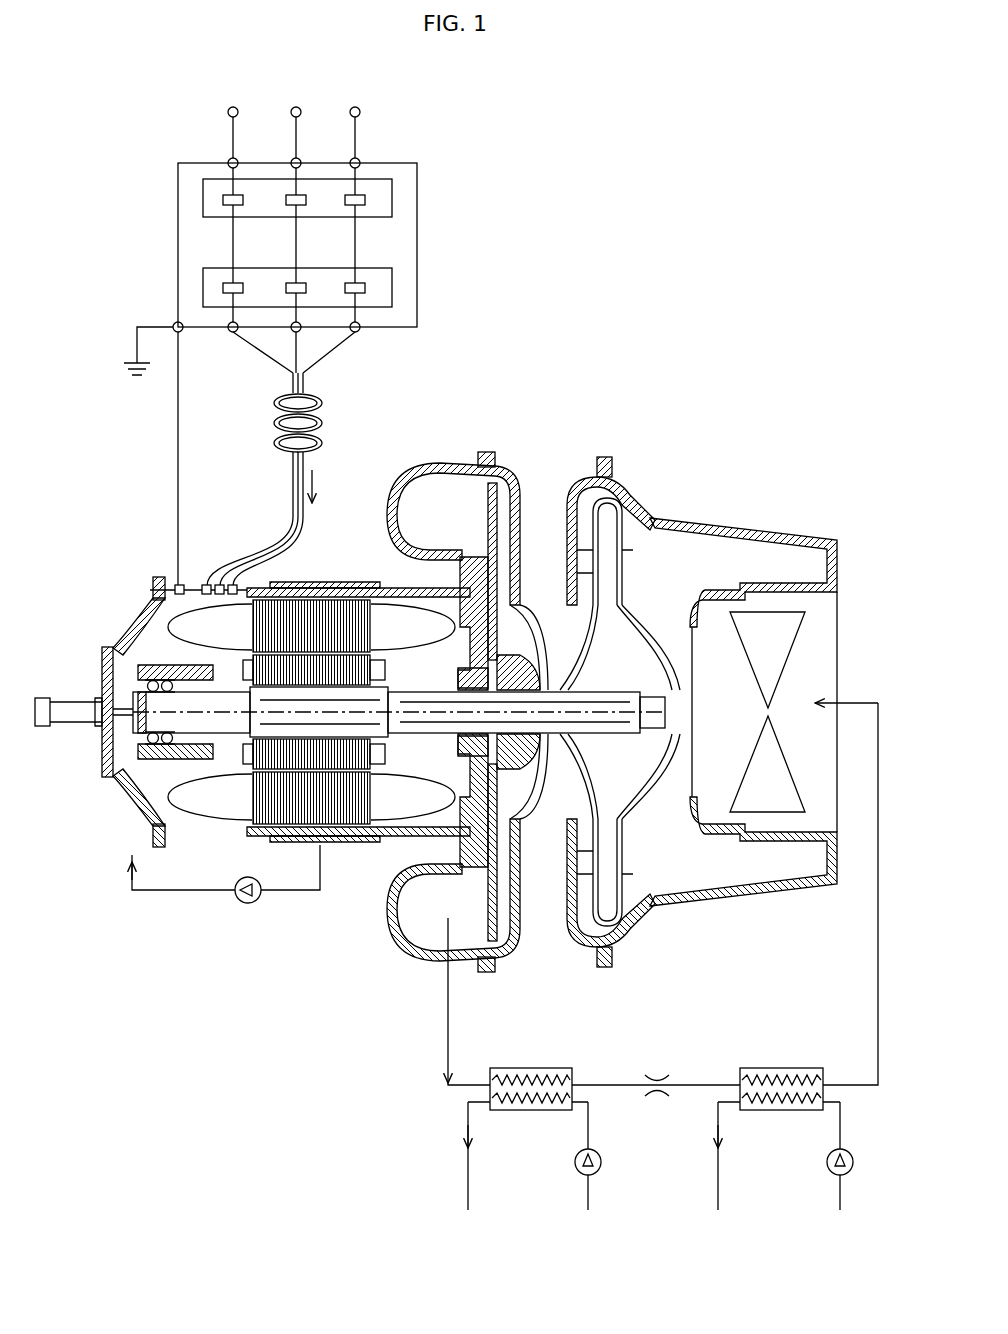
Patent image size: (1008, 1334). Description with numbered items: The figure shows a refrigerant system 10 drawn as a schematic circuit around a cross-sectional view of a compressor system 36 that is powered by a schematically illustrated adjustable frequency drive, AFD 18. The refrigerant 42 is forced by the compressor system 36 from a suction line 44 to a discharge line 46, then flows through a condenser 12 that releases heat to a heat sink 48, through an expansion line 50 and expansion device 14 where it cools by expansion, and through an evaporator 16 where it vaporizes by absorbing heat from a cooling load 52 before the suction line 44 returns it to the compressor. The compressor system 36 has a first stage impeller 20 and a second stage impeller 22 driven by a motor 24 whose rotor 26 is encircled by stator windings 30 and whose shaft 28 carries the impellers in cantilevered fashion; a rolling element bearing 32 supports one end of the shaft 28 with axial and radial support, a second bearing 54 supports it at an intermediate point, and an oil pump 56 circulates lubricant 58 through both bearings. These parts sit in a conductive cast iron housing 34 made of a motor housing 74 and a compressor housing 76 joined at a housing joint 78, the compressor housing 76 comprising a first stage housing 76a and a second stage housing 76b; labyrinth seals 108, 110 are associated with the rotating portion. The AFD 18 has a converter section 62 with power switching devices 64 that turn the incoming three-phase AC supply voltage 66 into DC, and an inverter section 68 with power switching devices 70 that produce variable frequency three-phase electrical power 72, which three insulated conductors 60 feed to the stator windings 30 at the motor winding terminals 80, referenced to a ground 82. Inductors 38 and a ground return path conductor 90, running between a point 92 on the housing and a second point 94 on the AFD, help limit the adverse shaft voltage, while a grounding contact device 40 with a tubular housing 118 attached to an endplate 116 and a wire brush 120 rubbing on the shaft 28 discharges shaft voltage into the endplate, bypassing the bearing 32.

The refrigerant system 10 is at (280, 1012).
The condenser 12 is at (537, 1068).
The expansion device 14 is at (668, 1074).
The evaporator 16 is at (775, 1068).
The AFD 18 is at (178, 235).
The first stage impeller 20 is at (693, 645).
The second stage impeller 22 is at (558, 614).
The motor 24 is at (348, 537).
The rotor 26 is at (242, 762).
The shaft 28 is at (440, 688).
The stator windings 30 is at (334, 828).
The rolling element bearing 32 is at (143, 738).
The cast iron housing 34 is at (140, 615).
The compressor system 36 is at (200, 985).
The inductor 38 is at (274, 446).
The grounding contact device 40 is at (74, 700).
The refrigerant 42 is at (819, 700).
The suction line 44 is at (878, 958).
The discharge line 46 is at (446, 1062).
The heat sink 48 is at (590, 1112).
The expansion line 50 is at (610, 1083).
The cooling load 52 is at (842, 1123).
The second bearing 54 is at (457, 743).
The oil pump 56 is at (247, 904).
The lubricant 58 is at (124, 862).
The insulated conductors 60 is at (292, 496).
The converter section 62 is at (417, 163).
The power switching devices 64 is at (382, 199).
The 3-phase AC supply voltage 66 is at (213, 108).
The inverter section 68 is at (397, 268).
The power switching devices 70 is at (383, 290).
The variable frequency 3-phase electrical power 72 is at (318, 483).
The motor housing 74 is at (137, 623).
The compressor housing 76 is at (450, 464).
The first stage housing 76a is at (628, 483).
The second stage housing 76b is at (517, 477).
The housing joint 78 is at (468, 578).
The motor winding terminals 80 is at (240, 578).
The ground 82 is at (135, 336).
The ground return path conductor 90 is at (176, 452).
The point on housing 92 is at (180, 583).
The second point on AFD 94 is at (175, 324).
The labyrinth seal 108 is at (506, 757).
The labyrinth seal 110 is at (596, 684).
The endplate 116 is at (100, 755).
The tubular housing 118 is at (59, 726).
The wire brush 120 is at (128, 708).